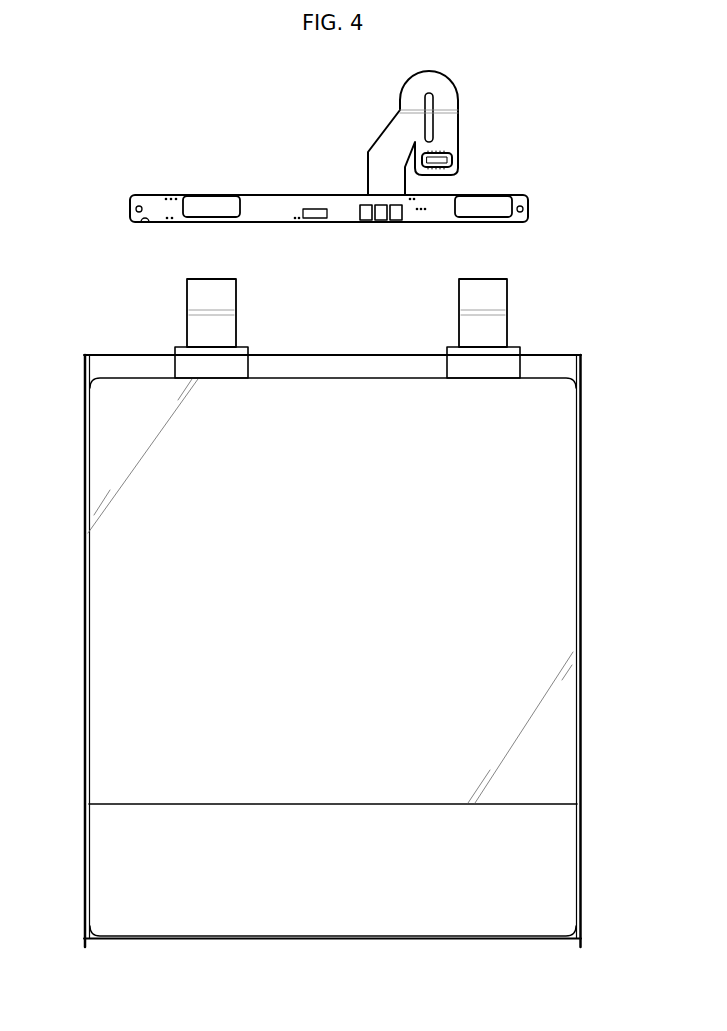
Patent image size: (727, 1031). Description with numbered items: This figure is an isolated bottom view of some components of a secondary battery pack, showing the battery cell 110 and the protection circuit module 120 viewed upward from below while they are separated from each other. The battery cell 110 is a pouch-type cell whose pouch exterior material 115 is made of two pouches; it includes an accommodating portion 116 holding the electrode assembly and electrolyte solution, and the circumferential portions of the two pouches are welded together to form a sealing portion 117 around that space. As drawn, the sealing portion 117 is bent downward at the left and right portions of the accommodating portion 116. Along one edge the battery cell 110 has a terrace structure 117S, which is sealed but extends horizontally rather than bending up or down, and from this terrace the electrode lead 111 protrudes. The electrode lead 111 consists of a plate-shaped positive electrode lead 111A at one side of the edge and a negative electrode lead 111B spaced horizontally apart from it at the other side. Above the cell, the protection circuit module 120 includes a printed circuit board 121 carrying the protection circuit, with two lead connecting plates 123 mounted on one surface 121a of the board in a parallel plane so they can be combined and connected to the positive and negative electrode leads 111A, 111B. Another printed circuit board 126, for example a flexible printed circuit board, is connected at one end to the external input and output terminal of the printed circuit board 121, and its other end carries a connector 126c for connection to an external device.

The battery cell 110 is at (77, 337).
The electrode lead 111 is at (405, 275).
The positive electrode lead 111A is at (237, 296).
The negative electrode lead 111B is at (458, 296).
The pouch exterior material 115 is at (513, 931).
The accommodating portion 116 is at (471, 510).
The sealing portion 117 is at (541, 361).
The terrace structure 117S is at (350, 368).
The protection circuit module 120 is at (171, 157).
The printed circuit board 121 is at (150, 196).
The surface of the printed circuit board 121a is at (149, 213).
The lead connecting plate 123 is at (218, 196).
The printed circuit board 126 is at (392, 136).
The connector 126c is at (448, 153).